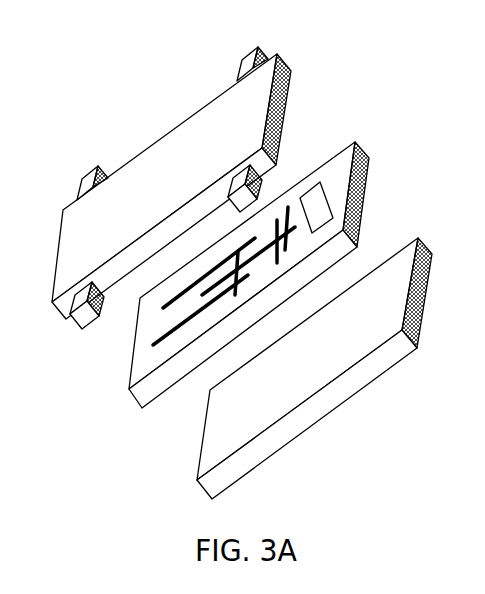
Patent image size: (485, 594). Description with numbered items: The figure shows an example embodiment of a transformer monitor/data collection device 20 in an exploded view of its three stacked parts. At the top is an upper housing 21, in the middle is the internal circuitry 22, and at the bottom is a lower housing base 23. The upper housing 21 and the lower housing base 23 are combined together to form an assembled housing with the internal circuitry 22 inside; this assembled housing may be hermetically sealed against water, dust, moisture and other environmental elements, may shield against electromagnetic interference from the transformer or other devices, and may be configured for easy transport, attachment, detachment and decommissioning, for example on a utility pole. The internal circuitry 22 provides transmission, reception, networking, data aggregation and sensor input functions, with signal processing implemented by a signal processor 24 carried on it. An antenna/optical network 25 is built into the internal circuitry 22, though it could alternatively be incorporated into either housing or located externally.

The transformer monitor/data collection device 20 is at (242, 262).
The upper housing 21 is at (137, 157).
The internal circuitry 22 is at (228, 217).
The lower housing base 23 is at (200, 440).
The signal processor 24 is at (330, 193).
The antenna/optical network 25 is at (296, 202).